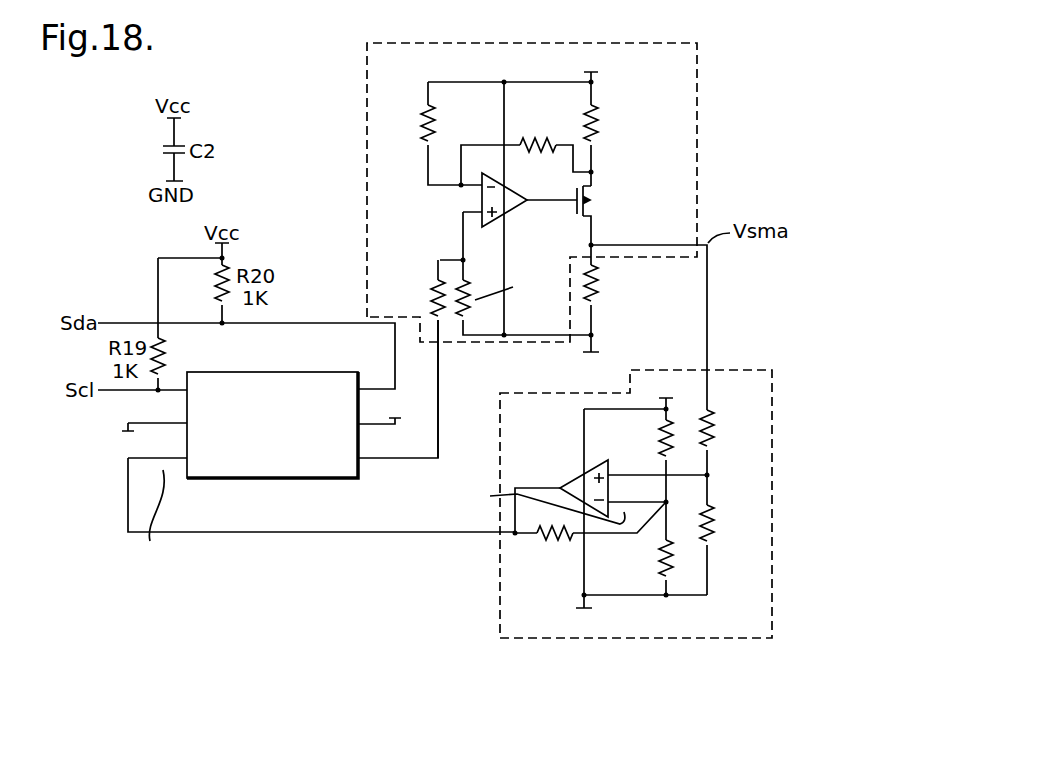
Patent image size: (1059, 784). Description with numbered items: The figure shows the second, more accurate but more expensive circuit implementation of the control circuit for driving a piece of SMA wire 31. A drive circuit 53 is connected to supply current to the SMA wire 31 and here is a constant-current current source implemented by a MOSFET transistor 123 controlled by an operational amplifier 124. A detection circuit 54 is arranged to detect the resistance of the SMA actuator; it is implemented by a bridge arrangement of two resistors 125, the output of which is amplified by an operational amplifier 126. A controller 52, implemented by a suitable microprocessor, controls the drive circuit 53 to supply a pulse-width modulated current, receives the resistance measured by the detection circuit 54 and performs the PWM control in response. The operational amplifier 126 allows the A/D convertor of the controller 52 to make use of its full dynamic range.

The controller 52 is at (305, 378).
The drive circuit 53 is at (697, 75).
The detection circuit 54 is at (752, 370).
The MOSFET transistor 123 is at (585, 196).
The operational amplifier 124 is at (482, 194).
The resistors 125 is at (709, 448).
The operational amplifier 126 is at (587, 484).
The piece of SMA wire 31 is at (597, 306).